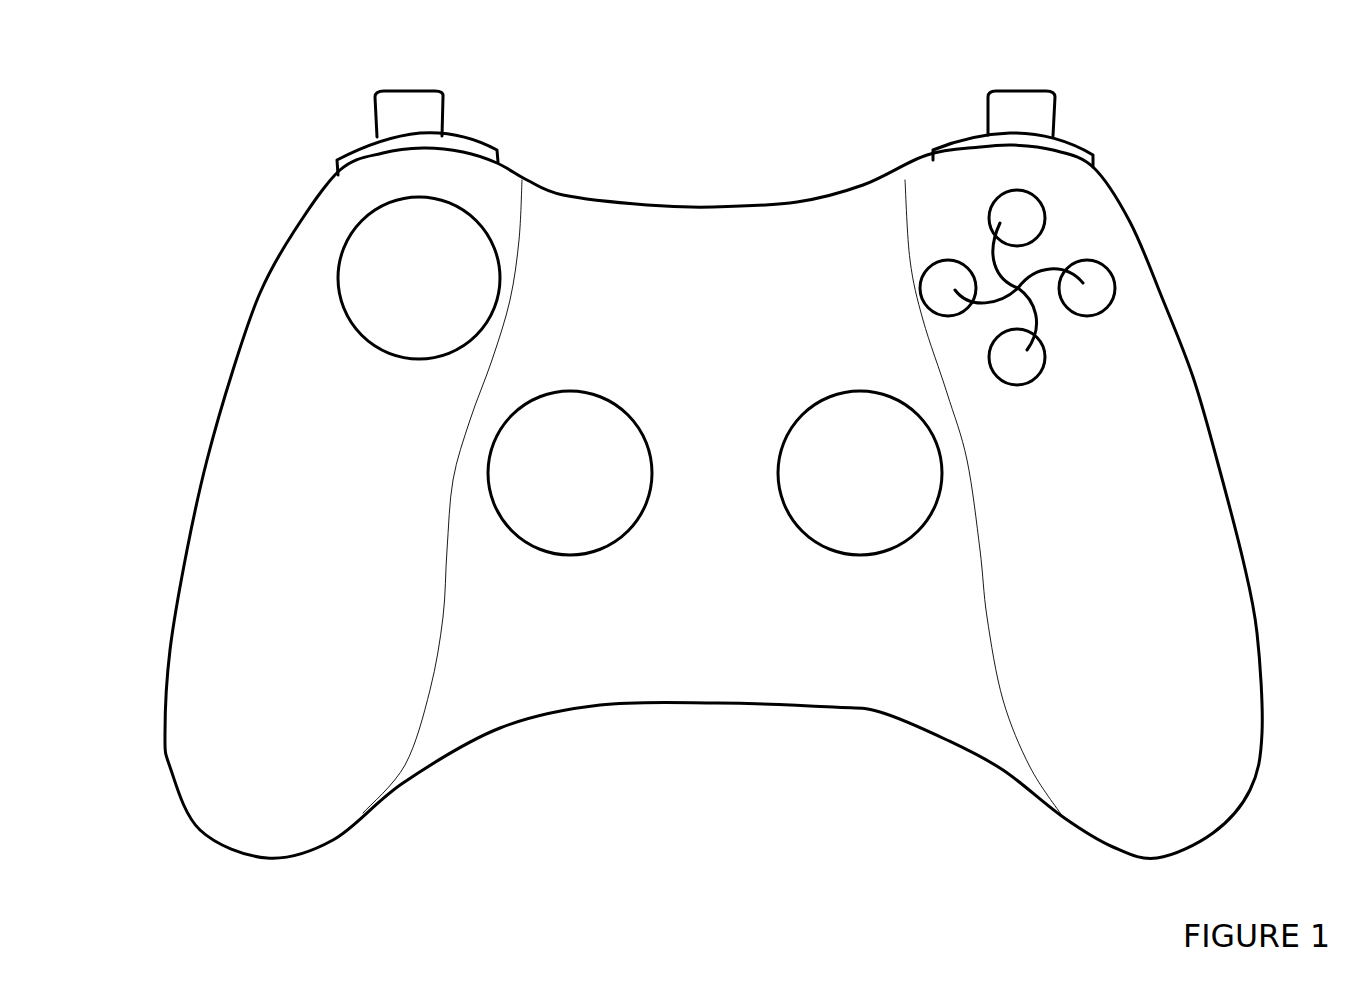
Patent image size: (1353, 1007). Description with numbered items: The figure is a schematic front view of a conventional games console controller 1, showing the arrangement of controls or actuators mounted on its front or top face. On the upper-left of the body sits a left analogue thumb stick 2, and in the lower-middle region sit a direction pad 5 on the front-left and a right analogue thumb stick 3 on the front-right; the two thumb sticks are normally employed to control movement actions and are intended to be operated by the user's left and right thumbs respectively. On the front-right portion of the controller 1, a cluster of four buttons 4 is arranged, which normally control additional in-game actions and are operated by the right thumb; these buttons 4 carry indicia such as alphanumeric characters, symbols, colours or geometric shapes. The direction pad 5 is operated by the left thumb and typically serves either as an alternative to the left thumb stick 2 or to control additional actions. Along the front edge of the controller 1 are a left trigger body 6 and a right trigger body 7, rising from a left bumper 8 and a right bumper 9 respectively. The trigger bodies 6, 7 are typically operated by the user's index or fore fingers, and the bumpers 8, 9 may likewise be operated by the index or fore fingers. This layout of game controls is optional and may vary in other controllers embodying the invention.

The controller 1 is at (208, 104).
The left analogue thumb stick 2 is at (339, 262).
The right analogue thumb stick 3 is at (848, 512).
The buttons 4 is at (1027, 277).
The direction pad 5 is at (563, 513).
The left trigger body 6 is at (410, 95).
The right trigger body 7 is at (1015, 102).
The left bumper 8 is at (358, 157).
The right bumper 9 is at (958, 147).